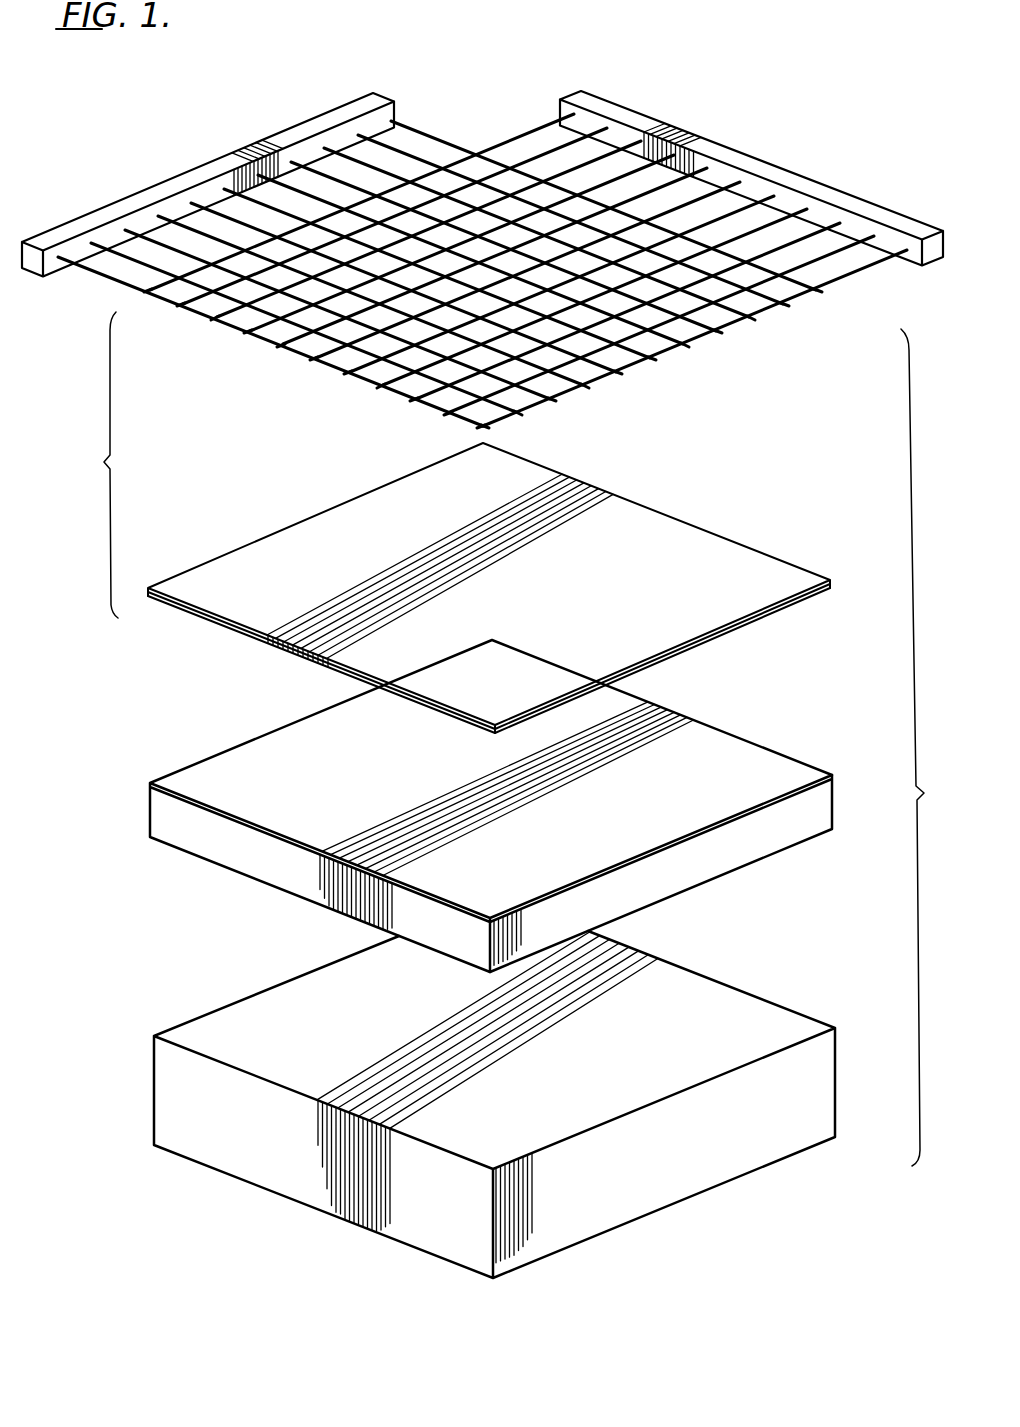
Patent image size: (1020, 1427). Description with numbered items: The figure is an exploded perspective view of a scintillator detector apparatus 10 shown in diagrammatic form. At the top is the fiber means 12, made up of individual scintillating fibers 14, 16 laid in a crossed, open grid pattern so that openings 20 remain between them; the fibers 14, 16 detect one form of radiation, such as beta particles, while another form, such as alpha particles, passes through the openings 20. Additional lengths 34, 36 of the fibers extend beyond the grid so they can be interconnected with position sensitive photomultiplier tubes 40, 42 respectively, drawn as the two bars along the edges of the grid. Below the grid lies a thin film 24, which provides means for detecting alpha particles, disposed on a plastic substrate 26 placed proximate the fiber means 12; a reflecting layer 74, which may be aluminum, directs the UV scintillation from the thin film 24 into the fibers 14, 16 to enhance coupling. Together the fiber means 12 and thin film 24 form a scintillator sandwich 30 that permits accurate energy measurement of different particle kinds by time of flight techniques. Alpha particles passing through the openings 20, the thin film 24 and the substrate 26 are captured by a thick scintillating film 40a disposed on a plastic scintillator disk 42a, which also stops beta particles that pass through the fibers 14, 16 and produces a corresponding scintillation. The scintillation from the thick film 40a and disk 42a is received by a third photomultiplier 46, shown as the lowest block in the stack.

The scintillator detector apparatus 10 is at (702, 75).
The fiber means 12 is at (477, 113).
The fiber 14 is at (533, 134).
The fiber 16 is at (412, 127).
The openings 20 is at (717, 317).
The thin film 24 is at (745, 548).
The plastic substrate 26 is at (777, 608).
The scintillator sandwich 30 is at (94, 465).
The additional length of fiber 34 is at (801, 238).
The additional length of fiber 36 is at (313, 163).
The photomultiplier tube 40 is at (718, 146).
The thick scintillating film 40a is at (660, 712).
The photomultiplier tube 42 is at (200, 170).
The plastic scintillator disk 42a is at (833, 795).
The third photomultiplier 46 is at (828, 1060).
The reflecting layer 74 is at (218, 625).